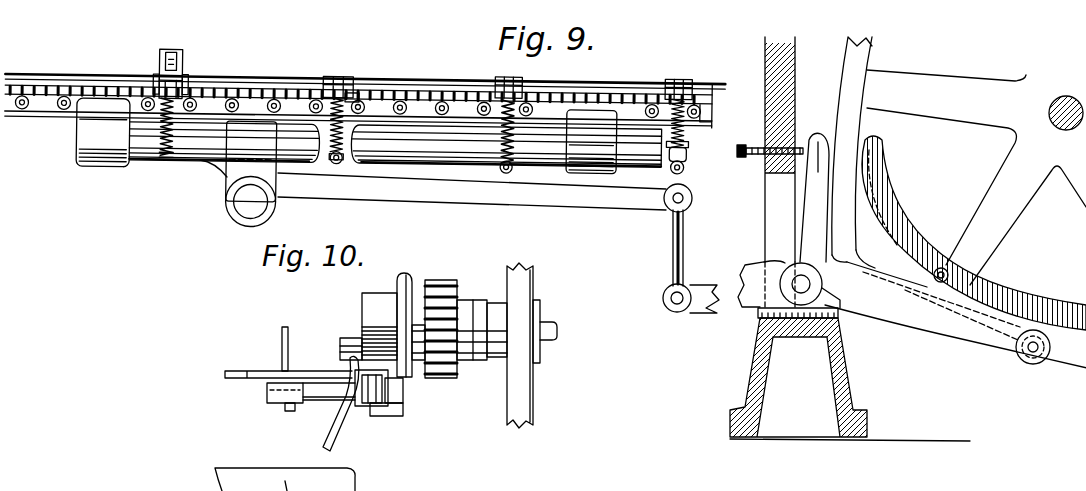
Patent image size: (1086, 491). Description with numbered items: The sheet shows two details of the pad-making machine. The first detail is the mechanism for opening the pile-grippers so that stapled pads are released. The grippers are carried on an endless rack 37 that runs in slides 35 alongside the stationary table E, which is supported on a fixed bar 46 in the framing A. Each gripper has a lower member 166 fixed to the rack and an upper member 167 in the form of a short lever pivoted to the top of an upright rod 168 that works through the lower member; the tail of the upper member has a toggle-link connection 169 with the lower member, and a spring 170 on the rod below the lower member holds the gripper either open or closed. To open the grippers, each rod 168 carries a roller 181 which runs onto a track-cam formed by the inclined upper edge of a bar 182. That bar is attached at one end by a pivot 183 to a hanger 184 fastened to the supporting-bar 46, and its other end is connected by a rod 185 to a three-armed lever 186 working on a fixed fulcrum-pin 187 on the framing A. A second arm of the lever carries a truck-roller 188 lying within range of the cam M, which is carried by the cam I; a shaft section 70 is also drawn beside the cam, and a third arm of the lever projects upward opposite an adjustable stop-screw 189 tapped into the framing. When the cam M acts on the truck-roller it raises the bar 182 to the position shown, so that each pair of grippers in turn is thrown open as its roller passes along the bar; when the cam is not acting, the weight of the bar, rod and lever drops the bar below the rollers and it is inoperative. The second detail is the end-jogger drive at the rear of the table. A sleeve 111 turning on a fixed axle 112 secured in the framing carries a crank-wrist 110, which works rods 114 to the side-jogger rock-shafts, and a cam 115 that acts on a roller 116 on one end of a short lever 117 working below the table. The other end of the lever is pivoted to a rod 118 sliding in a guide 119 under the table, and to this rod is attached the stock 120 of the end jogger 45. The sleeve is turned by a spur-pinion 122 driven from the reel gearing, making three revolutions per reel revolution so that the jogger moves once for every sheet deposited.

In FIG. 9, the slides 35 is at (47, 107).
In FIG. 9, the endless racks 37 is at (708, 95).
In FIG. 9, the fixed bars 46 is at (197, 150).
In FIG. 9, the wheel hub shaft 70 is at (1063, 130).
In FIG. 9, the lower members 166 is at (352, 94).
In FIG. 9, the upper members 167 is at (168, 48).
In FIG. 9, the upright rods 168 is at (157, 73).
In FIG. 9, the toggle-link connections 169 is at (187, 72).
In FIG. 9, the springs 170 is at (157, 155).
In FIG. 9, the roller 181 is at (345, 156).
In FIG. 9, the bars 182 is at (433, 185).
In FIG. 9, the pivot 183 is at (252, 198).
In FIG. 9, the hanger 184 is at (251, 161).
In FIG. 9, the rod 185 is at (674, 258).
In FIG. 9, the three-armed lever 186 is at (955, 315).
In FIG. 9, the fulcrum-pin 187 is at (800, 283).
In FIG. 9, the truck-roller 188 is at (1030, 362).
In FIG. 9, the stop-screw 189 is at (795, 144).
In FIG. 10, the end jogger 45 is at (290, 334).
In FIG. 10, the crank-wrists 110 is at (358, 348).
In FIG. 10, the sleeve 111 is at (474, 296).
In FIG. 10, the fixed axle 112 is at (559, 331).
In FIG. 10, the rods 114 is at (337, 432).
In FIG. 10, the cam 115 is at (400, 278).
In FIG. 10, the roller 116 is at (400, 387).
In FIG. 10, the short lever 117 is at (387, 417).
In FIG. 10, the rod 118 is at (325, 399).
In FIG. 10, the guide 119 is at (358, 408).
In FIG. 10, the stock 120 is at (285, 394).
In FIG. 10, the spur-pinion 122 is at (433, 280).
In FIG. 9, the table E is at (85, 94).
In FIG. 10, the table E is at (228, 374).
In FIG. 9, the framing A is at (767, 172).
In FIG. 10, the framing A is at (520, 401).
In FIG. 9, the cam I is at (853, 152).
In FIG. 9, the cam M is at (1013, 307).